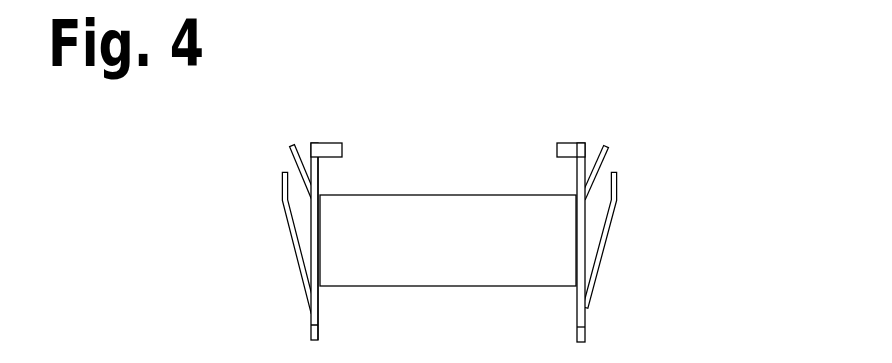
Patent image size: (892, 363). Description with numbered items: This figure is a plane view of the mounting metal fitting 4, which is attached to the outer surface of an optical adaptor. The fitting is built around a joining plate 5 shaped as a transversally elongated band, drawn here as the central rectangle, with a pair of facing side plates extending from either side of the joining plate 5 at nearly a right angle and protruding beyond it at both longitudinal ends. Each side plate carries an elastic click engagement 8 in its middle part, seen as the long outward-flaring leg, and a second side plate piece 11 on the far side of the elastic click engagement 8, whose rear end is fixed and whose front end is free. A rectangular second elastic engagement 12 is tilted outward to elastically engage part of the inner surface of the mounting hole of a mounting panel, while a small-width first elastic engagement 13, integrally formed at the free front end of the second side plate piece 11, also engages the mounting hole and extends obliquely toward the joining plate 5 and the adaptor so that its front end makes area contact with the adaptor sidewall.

The mounting metal fitting 4 is at (492, 122).
The joining plate 5 is at (450, 287).
The elastic click engagement 8 is at (610, 218).
The second side plate piece 11 is at (576, 303).
The second elastic engagement 12 is at (607, 160).
The first elastic engagement 13 is at (557, 150).